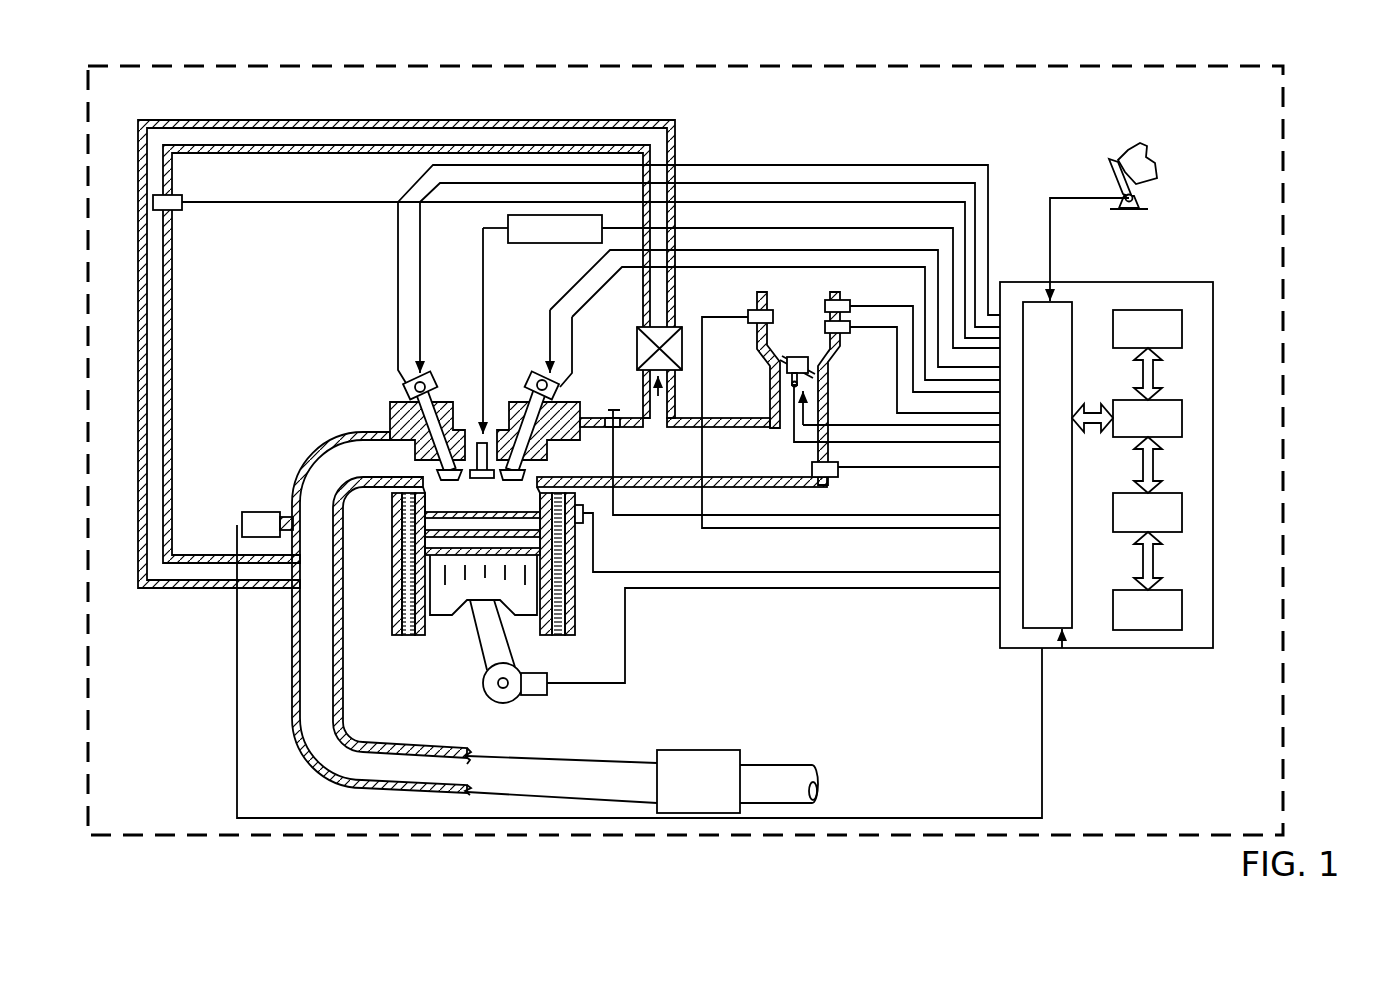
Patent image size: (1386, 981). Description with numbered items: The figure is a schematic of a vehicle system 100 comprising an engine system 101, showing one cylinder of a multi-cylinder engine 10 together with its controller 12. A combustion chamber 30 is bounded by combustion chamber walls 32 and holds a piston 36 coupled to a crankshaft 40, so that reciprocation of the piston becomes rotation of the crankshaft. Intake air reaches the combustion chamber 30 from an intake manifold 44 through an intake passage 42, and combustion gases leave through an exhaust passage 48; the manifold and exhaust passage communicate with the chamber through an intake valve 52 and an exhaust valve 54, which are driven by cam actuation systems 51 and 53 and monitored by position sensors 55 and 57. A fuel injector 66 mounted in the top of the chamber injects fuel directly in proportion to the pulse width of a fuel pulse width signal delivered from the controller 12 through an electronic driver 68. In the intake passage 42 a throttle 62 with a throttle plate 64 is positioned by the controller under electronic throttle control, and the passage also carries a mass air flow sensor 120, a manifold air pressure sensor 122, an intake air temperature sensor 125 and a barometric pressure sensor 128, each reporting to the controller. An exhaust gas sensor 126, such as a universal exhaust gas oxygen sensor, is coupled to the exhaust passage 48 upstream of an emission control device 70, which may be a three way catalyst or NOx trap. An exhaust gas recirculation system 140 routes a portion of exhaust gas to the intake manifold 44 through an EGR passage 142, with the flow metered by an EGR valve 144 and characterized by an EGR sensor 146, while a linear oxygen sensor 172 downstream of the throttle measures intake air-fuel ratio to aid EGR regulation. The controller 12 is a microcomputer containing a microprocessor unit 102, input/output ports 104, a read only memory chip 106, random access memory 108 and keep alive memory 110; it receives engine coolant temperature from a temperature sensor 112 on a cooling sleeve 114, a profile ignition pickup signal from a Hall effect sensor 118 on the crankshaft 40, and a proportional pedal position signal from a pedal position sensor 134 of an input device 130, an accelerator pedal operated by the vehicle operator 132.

The vehicle system 100 is at (1305, 158).
The engine system 101 is at (913, 130).
The engine 10 is at (330, 356).
The controller 12 is at (1139, 452).
The combustion chamber 30 is at (399, 590).
The combustion chamber walls 32 is at (425, 624).
The piston 36 is at (467, 588).
The crankshaft 40 is at (492, 702).
The intake passage 42 is at (862, 397).
The intake manifold 44 is at (780, 487).
The exhaust passage 48 is at (608, 625).
The intake cam actuation system 51 is at (540, 376).
The intake valve 52 is at (522, 464).
The exhaust cam actuation system 53 is at (426, 376).
The exhaust valve 54 is at (396, 432).
The intake valve position sensor 55 is at (560, 386).
The exhaust valve position sensor 57 is at (404, 385).
The throttle 62 is at (817, 374).
The throttle plate 64 is at (778, 360).
The fuel injector 66 is at (486, 430).
The electronic driver 68 is at (576, 244).
The emission control device 70 is at (737, 781).
The microprocessor unit 102 is at (1182, 412).
The input/output ports 104 is at (1074, 300).
The read only memory chip 106 is at (1182, 320).
The random access memory 108 is at (1182, 506).
The keep alive memory 110 is at (1182, 604).
The temperature sensor 112 is at (584, 522).
The cooling sleeve 114 is at (563, 600).
The Hall effect sensor 118 is at (545, 695).
The mass air flow sensor 120 is at (827, 301).
The manifold air pressure sensor 122 is at (840, 479).
The intake air temperature sensor 125 is at (826, 327).
The exhaust gas sensor 126 is at (240, 515).
The barometric pressure sensor 128 is at (748, 316).
The input device 130 is at (1163, 214).
The vehicle operator 132 is at (1158, 156).
The pedal position sensor 134 is at (1140, 199).
The exhaust gas recirculation system 140 is at (580, 329).
The EGR passage 142 is at (405, 120).
The EGR valve 144 is at (636, 350).
The EGR sensor 146 is at (176, 206).
The linear oxygen sensor 172 is at (619, 434).